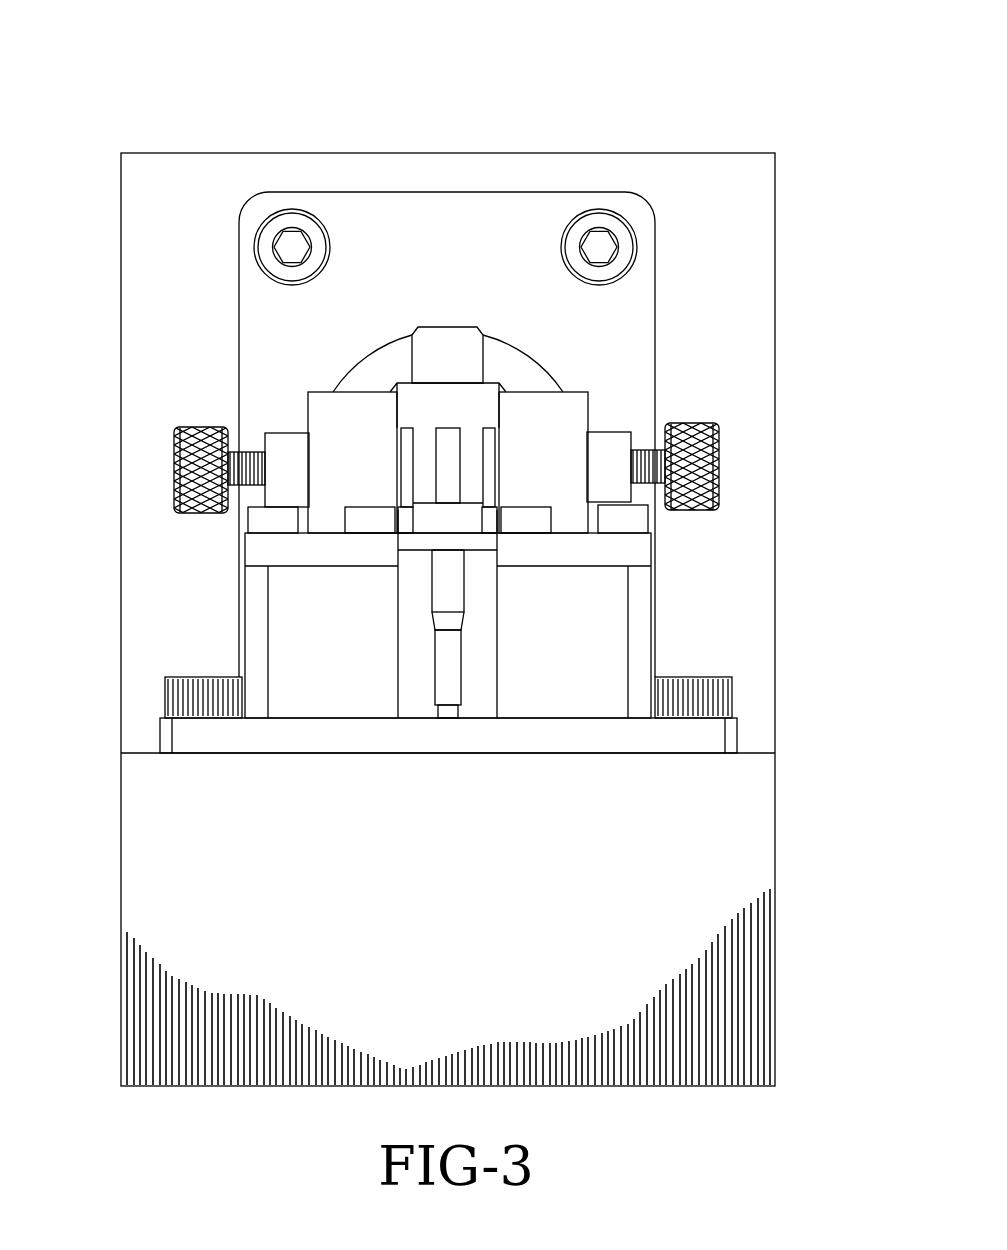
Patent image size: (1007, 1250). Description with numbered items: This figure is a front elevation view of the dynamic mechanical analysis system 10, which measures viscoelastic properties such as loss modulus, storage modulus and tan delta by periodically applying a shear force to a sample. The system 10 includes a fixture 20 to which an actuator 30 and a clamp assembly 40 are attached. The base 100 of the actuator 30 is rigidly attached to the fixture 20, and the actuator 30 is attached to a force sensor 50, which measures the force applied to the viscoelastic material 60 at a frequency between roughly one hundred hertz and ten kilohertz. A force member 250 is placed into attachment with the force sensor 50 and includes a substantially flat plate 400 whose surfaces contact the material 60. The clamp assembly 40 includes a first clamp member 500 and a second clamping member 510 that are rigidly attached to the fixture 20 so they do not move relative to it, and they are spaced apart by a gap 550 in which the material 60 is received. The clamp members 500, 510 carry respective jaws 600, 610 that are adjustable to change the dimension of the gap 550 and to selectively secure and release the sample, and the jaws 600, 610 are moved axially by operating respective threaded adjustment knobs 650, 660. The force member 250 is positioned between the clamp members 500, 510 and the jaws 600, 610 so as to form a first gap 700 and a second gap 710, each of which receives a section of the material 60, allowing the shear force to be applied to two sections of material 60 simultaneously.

The dynamic mechanical analysis system 10 is at (78, 122).
The fixture 20 is at (735, 213).
The actuator 30 is at (447, 376).
The base 100 is at (532, 228).
The force sensor 50 is at (447, 352).
The force member 250 is at (450, 424).
The viscoelastic material 60 is at (425, 460).
The jaw 600 is at (407, 472).
The jaw 610 is at (490, 468).
The threaded adjustment knob 650 is at (172, 466).
The threaded adjustment knob 660 is at (720, 460).
The clamp assembly 40 is at (447, 680).
The first clamp member 500 is at (315, 688).
The second clamping member 510 is at (580, 688).
The flat plate 400 is at (443, 488).
The first gap 700 is at (425, 503).
The second gap 710 is at (472, 507).
The gap 550 is at (447, 505).